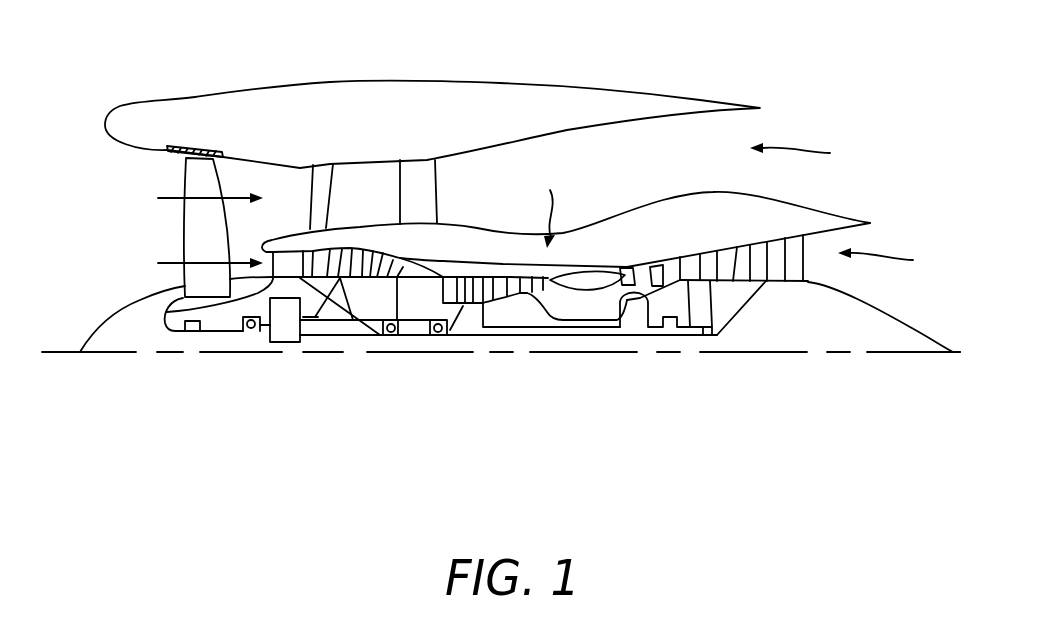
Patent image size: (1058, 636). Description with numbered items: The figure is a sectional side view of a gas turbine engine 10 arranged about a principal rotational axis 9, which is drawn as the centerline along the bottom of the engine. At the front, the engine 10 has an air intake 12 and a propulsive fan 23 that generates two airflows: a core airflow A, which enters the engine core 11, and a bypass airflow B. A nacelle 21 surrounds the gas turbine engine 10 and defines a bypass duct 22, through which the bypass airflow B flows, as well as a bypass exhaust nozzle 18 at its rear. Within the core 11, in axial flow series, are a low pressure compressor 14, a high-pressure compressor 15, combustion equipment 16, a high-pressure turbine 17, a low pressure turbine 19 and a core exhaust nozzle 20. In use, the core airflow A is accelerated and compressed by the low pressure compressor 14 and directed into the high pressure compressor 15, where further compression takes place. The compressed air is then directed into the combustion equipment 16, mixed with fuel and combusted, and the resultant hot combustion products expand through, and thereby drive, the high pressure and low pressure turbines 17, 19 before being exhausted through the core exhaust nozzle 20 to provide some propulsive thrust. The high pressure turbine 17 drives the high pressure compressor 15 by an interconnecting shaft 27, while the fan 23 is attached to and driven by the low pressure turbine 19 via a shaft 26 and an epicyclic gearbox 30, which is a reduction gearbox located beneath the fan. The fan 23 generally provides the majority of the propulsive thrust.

The principal rotational axis 9 is at (755, 357).
The gas turbine engine 10 is at (180, 94).
The core 11 is at (555, 204).
The air intake 12 is at (128, 175).
The low pressure compressor 14 is at (357, 255).
The high-pressure compressor 15 is at (499, 285).
The combustion equipment 16 is at (577, 287).
The high-pressure turbine 17 is at (633, 262).
The bypass exhaust nozzle 18 is at (801, 155).
The low pressure turbine 19 is at (777, 240).
The core exhaust nozzle 20 is at (884, 300).
The nacelle 21 is at (413, 93).
The bypass duct 22 is at (704, 162).
The propulsive fan 23 is at (187, 230).
The shaft 26 is at (493, 343).
The interconnecting shaft 27 is at (533, 337).
The epicyclic gearbox 30 is at (283, 333).
The core airflow A is at (199, 262).
The bypass airflow B is at (200, 197).